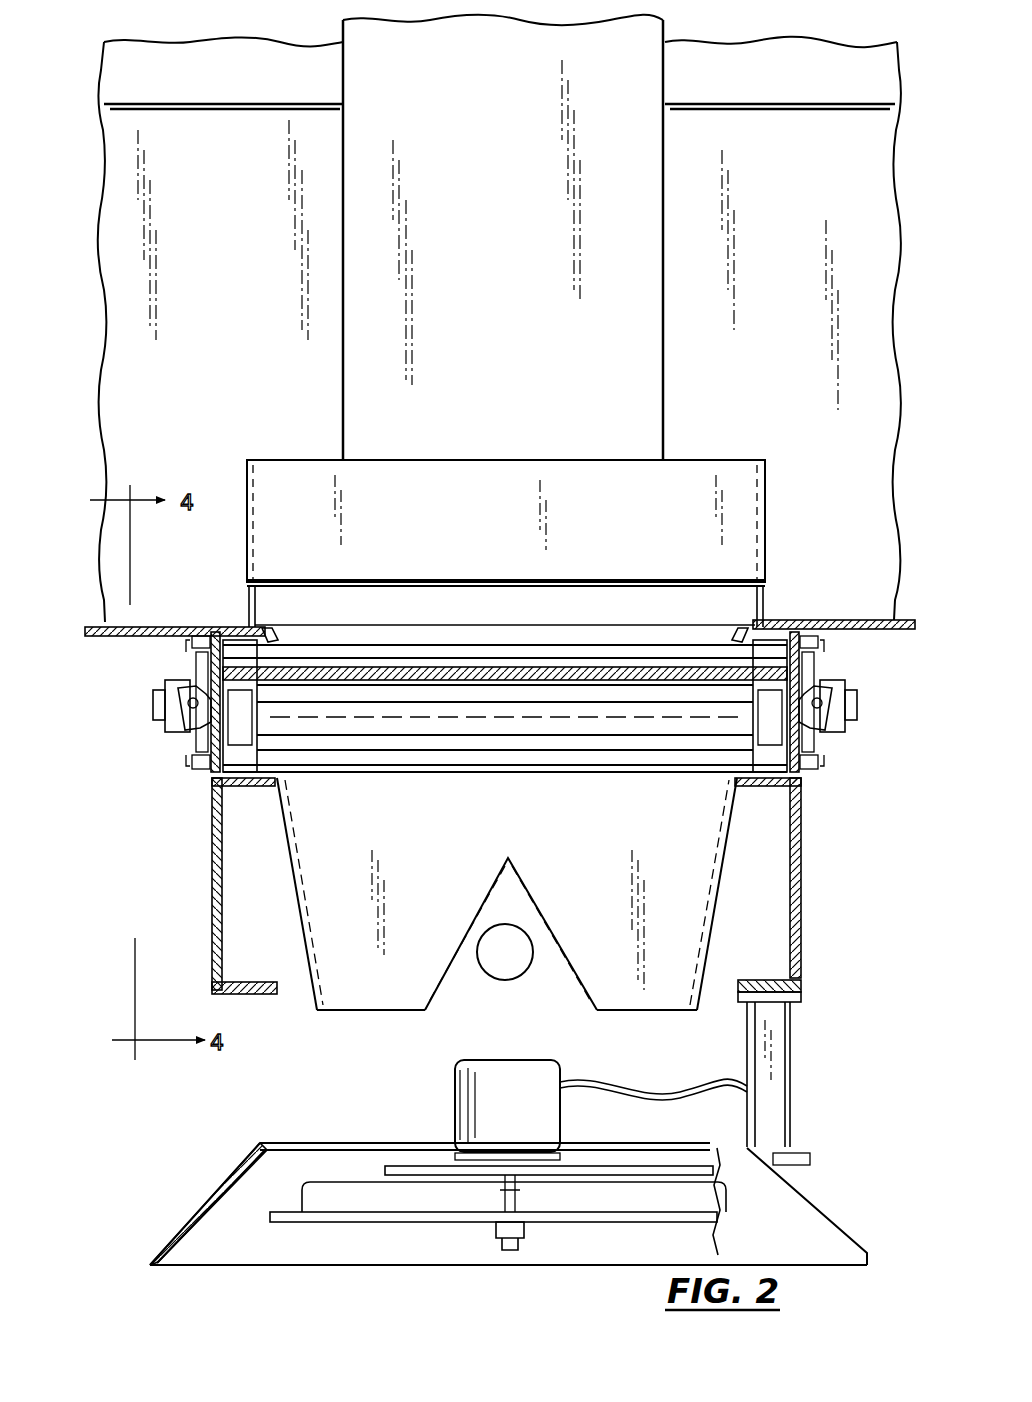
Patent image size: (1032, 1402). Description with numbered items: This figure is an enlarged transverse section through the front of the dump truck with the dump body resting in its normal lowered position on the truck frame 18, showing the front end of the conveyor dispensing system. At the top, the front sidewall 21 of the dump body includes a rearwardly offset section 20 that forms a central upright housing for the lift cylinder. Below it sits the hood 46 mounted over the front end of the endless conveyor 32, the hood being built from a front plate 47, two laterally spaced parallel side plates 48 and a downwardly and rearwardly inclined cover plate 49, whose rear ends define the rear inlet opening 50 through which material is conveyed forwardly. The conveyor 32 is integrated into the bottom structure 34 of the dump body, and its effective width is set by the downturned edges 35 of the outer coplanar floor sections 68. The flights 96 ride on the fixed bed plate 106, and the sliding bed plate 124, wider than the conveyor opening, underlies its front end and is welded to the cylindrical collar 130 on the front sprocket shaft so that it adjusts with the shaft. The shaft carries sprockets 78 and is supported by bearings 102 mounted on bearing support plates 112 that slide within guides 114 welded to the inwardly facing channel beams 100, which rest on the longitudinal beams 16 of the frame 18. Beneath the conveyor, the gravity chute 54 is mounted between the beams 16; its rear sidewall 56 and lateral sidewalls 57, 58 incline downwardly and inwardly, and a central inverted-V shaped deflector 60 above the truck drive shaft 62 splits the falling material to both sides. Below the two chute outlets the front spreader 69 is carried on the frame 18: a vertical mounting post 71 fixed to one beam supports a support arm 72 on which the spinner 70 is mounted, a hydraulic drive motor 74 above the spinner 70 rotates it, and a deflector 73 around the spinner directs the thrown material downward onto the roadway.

The rearwardly offset section 20 is at (490, 190).
The front sidewall 21 is at (224, 251).
The hood 46 is at (480, 522).
The cover plate 49 is at (291, 483).
The rear inlet opening 50 is at (735, 594).
The front plate 47 is at (638, 585).
The side plates 48 is at (247, 600).
The outer coplanar floor sections 68 is at (165, 625).
The bottom structure 34 is at (803, 610).
The endless conveyor 32 is at (502, 704).
The channel beams 100 is at (205, 745).
The guides 114 is at (185, 638).
The bearing support plates 112 is at (198, 665).
The bearings 102 is at (150, 735).
The downturned edges 35 is at (272, 632).
The flights 96 is at (373, 655).
The sliding bed plate 124 is at (530, 667).
The fixed bed plate 106 is at (595, 665).
The cylindrical collar 130 is at (588, 722).
The longitudinal beams 16 is at (210, 935).
The sprockets 78 is at (258, 790).
The truck frame 18 is at (810, 896).
The gravity chute 54 is at (506, 914).
The lateral sidewall 58 is at (298, 940).
The rear sidewall 56 is at (375, 1010).
The inverted-V shaped deflector 60 is at (537, 903).
The lateral sidewall 57 is at (713, 950).
The truck drive shaft 62 is at (518, 978).
The vertical mounting post 71 is at (792, 1110).
The hydraulic drive motor 74 is at (516, 1113).
The support arm 72 is at (626, 1173).
The spinner 70 is at (630, 1198).
The front spreader 69 is at (356, 1240).
The deflector 73 is at (200, 1208).